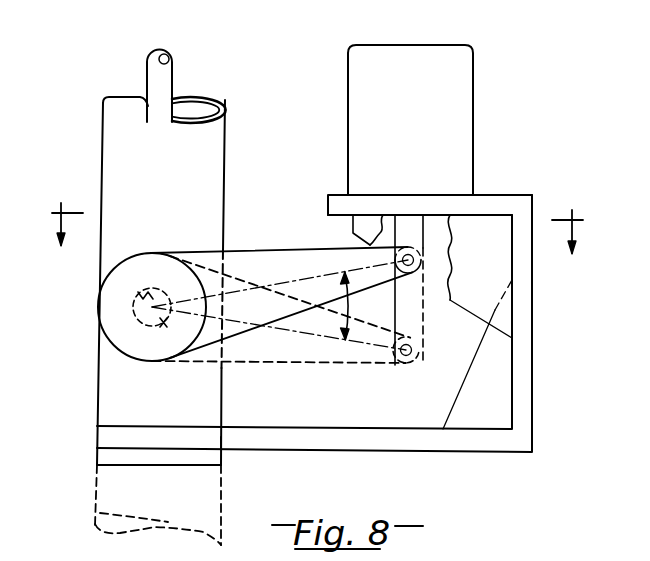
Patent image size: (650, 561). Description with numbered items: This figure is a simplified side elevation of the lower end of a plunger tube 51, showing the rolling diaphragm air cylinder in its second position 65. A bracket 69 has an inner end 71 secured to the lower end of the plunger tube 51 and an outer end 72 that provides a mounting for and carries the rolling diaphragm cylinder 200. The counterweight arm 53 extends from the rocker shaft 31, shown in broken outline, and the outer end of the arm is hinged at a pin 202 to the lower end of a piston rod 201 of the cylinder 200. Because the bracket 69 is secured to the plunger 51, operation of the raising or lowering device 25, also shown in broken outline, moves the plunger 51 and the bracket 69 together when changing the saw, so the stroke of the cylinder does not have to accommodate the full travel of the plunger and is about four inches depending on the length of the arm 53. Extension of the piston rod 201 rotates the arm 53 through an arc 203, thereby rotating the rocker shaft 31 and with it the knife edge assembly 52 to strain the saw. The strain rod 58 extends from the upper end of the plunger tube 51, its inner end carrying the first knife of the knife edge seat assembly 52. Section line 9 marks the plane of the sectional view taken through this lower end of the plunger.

The section line 9- 9 is at (317, 219).
The raising or lowering device 25 is at (113, 485).
The rocker shaft 31 is at (150, 290).
The plunger tube 51 is at (207, 183).
The knife edge assembly 52 is at (96, 368).
The counterweight arm 53 is at (306, 247).
The strain rod 58 is at (160, 81).
The second position of the air cylinder 65 is at (440, 120).
The bracket 69 is at (526, 386).
The inner end of the bracket 71 is at (221, 436).
The outer end of the bracket 72 is at (483, 203).
The rolling diaphragm cylinder 200 is at (425, 99).
The piston rod 201 is at (415, 229).
The pin 202 is at (421, 262).
The arc 203 is at (349, 308).